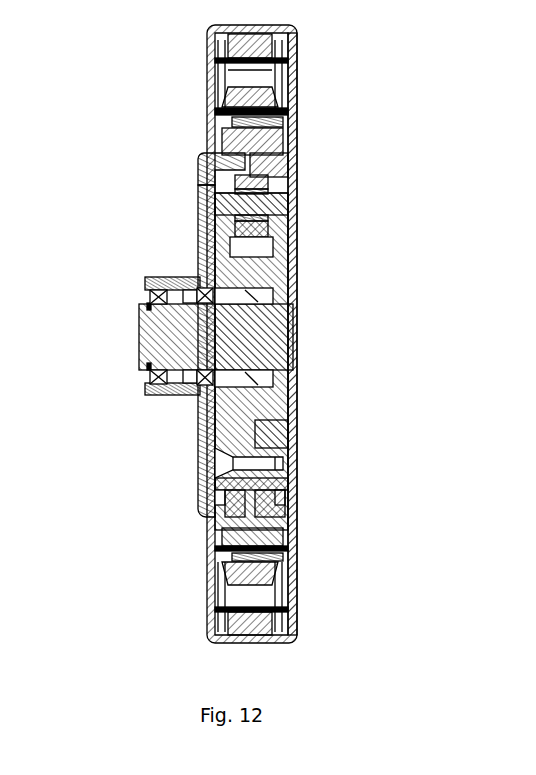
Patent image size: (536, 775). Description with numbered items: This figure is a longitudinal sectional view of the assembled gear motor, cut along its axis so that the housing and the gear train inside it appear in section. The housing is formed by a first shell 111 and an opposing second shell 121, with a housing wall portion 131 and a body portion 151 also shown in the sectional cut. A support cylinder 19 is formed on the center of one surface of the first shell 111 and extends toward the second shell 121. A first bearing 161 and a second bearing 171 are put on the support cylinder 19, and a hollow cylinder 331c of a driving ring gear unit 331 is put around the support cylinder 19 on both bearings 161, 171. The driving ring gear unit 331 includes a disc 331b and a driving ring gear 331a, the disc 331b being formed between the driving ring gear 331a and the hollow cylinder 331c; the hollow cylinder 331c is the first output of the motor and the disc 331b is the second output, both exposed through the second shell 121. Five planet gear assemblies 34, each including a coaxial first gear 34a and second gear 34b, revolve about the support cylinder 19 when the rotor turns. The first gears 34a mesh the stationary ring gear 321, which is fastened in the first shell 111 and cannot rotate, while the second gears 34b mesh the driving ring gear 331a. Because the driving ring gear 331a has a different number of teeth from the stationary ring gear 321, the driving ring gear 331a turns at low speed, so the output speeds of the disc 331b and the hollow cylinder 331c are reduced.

The support cylinder 19 is at (295, 328).
The planet gear assembly 34 is at (290, 228).
The first gear 34a is at (288, 170).
The second gear 34b is at (203, 157).
The first shell 111 is at (295, 470).
The second shell 121 is at (208, 606).
The housing wall 131 is at (295, 606).
The rotor body 151 is at (295, 392).
The first bearing 161 is at (145, 281).
The second bearing 171 is at (145, 300).
The stationary ring gear 321 is at (290, 140).
The driving ring gear unit 331 is at (200, 249).
The driving ring gear 331a is at (200, 514).
The disc 331b is at (208, 468).
The hollow cylinder 331c is at (143, 393).